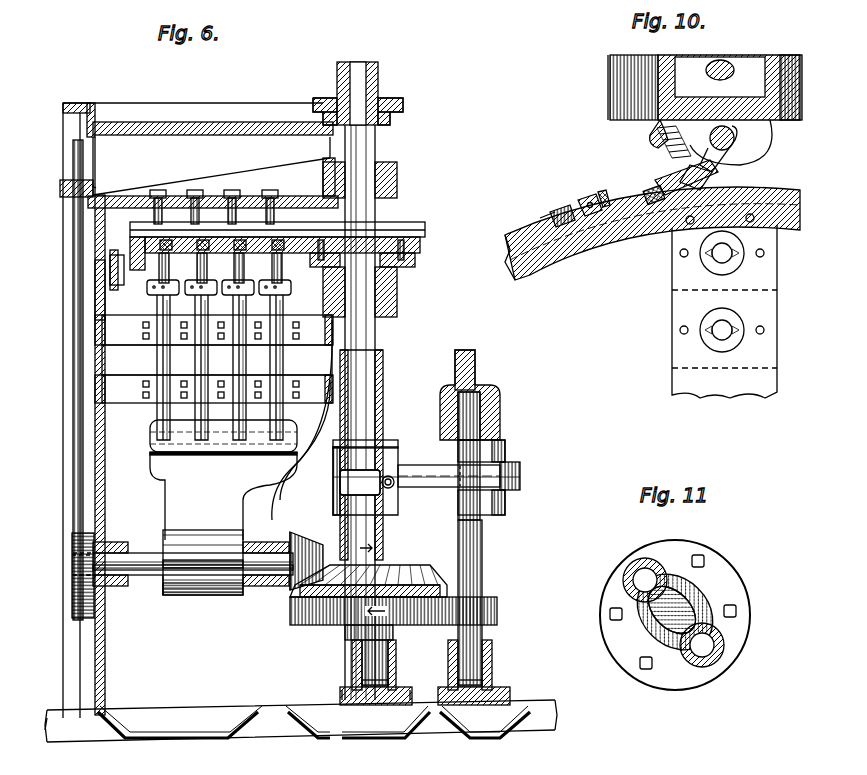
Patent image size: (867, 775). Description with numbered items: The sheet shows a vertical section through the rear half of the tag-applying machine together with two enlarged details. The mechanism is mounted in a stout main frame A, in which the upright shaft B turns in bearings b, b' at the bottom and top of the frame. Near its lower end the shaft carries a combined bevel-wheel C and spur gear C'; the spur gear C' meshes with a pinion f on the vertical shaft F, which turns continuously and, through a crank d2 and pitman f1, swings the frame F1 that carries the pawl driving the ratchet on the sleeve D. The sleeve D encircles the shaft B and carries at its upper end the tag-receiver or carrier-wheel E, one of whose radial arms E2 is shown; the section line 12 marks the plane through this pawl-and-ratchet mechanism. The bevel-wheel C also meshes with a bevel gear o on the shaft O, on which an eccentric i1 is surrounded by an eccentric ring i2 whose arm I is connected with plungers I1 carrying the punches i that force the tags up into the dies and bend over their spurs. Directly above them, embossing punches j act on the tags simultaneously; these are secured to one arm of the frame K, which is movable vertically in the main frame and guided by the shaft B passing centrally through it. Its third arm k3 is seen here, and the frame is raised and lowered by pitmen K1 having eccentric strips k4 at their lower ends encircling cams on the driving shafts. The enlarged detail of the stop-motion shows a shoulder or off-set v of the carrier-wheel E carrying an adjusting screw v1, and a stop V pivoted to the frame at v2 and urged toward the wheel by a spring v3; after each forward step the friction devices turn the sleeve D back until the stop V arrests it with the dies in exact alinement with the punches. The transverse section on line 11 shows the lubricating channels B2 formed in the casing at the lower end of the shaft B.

In FIG. 6, the main frame A is at (78, 657).
In FIG. 6, the frame K is at (232, 164).
In FIG. 6, the pitman K1 is at (78, 398).
In FIG. 6, the third arm of frame k3 is at (124, 192).
In FIG. 6, the eccentric strip k4 is at (74, 600).
In FIG. 6, the upper bearing b' is at (358, 90).
In FIG. 6, the upright shaft B is at (362, 220).
In FIG. 11, the upright shaft B is at (640, 628).
In FIG. 6, the embossing punch j is at (165, 214).
In FIG. 6, the carrier-wheel E is at (140, 250).
In FIG. 10, the carrier-wheel E is at (598, 258).
In FIG. 10, the radial arm E2 is at (675, 310).
In FIG. 6, the punch i is at (162, 270).
In FIG. 6, the plunger I1 is at (296, 302).
In FIG. 6, the arm I is at (223, 480).
In FIG. 6, the eccentric i1 is at (163, 580).
In FIG. 6, the eccentric ring i2 is at (203, 562).
In FIG. 6, the shaft O is at (138, 565).
In FIG. 6, the bevel gear o is at (305, 548).
In FIG. 6, the bevel-wheel C is at (368, 570).
In FIG. 6, the spur gear C' is at (384, 635).
In FIG. 6, the pinion f is at (495, 612).
In FIG. 6, the lower bearing b is at (376, 672).
In FIG. 11, the lower bearing b is at (675, 615).
In FIG. 6, the section line 11 is at (418, 657).
In FIG. 6, the section line 12 is at (558, 477).
In FIG. 6, the sleeve D is at (380, 425).
In FIG. 6, the vertical shaft F is at (482, 545).
In FIG. 6, the swinging frame F1 is at (336, 497).
In FIG. 6, the pitman f1 is at (428, 485).
In FIG. 6, the crank d2 is at (498, 452).
In FIG. 10, the shoulder v is at (555, 210).
In FIG. 10, the adjusting screw v1 is at (585, 196).
In FIG. 10, the pivot v2 is at (736, 140).
In FIG. 10, the spring v3 is at (650, 148).
In FIG. 10, the stop V is at (652, 185).
In FIG. 11, the lubricating channel B2 is at (722, 695).